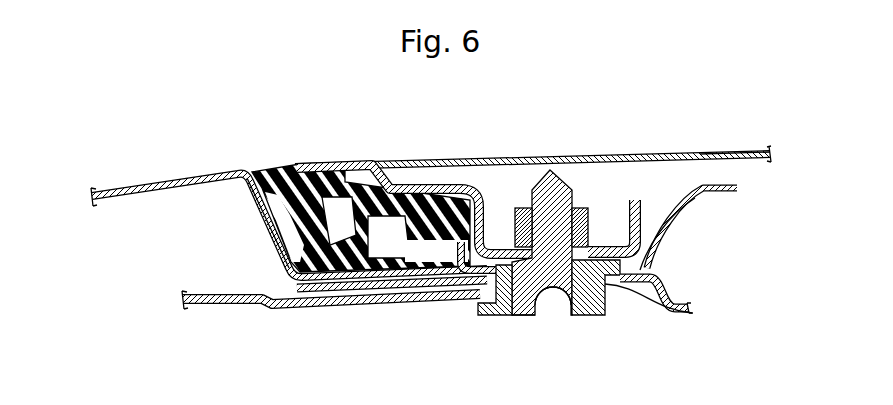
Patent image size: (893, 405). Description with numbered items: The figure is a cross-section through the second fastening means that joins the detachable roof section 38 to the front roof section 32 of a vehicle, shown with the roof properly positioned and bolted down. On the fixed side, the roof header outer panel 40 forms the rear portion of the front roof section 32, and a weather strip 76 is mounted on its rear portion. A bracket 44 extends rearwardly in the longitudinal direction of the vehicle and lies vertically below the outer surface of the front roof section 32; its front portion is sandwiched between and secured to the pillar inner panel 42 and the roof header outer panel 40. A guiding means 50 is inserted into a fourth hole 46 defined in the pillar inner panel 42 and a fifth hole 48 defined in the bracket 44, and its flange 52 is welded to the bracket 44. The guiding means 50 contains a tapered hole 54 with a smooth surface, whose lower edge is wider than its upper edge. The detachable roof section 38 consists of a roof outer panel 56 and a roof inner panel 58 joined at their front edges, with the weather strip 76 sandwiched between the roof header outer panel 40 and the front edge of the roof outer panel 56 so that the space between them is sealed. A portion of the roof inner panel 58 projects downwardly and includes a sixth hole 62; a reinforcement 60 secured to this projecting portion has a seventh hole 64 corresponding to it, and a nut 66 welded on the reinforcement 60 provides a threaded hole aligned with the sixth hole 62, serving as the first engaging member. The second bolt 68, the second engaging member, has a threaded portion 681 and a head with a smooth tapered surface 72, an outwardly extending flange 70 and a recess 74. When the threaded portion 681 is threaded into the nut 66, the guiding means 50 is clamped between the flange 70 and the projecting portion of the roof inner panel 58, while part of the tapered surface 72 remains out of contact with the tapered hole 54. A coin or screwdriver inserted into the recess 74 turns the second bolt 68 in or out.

The front roof section 32 is at (150, 172).
The roof header outer panel 40 is at (205, 172).
The weather strip 76 is at (270, 162).
The reinforcement 60 is at (468, 165).
The threaded portion 681 is at (551, 168).
The detachable roof section 38 is at (630, 150).
The roof outer panel 56 is at (710, 150).
The seventh hole 64 is at (515, 215).
The nut 66 is at (582, 207).
The sixth hole 62 is at (593, 210).
The roof inner panel 58 is at (705, 192).
The tapered surface 72 is at (655, 246).
The guiding means 50 is at (690, 310).
The second bolt 68 is at (632, 316).
The flange 70 is at (630, 310).
The tapered hole 54 is at (598, 307).
The recess 74 is at (558, 303).
The fifth hole 48 is at (518, 307).
The fourth hole 46 is at (492, 307).
The flange 52 is at (463, 275).
The bracket 44 is at (385, 292).
The pillar inner panel 42 is at (325, 306).